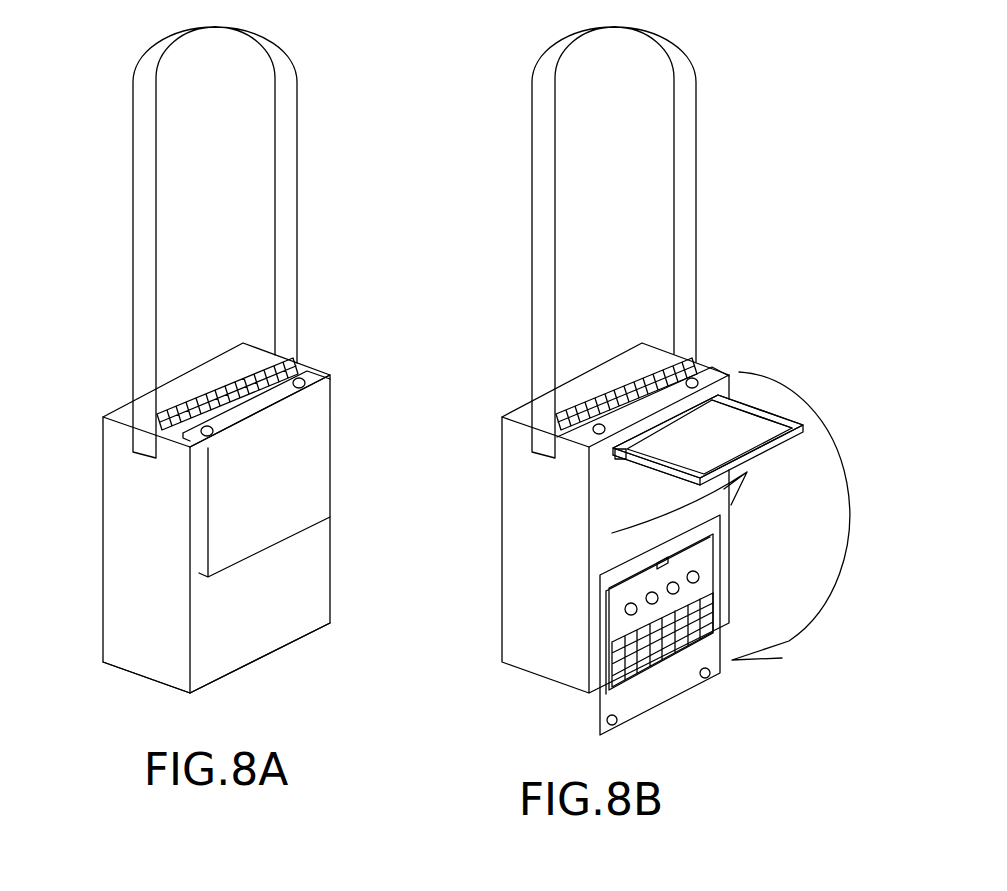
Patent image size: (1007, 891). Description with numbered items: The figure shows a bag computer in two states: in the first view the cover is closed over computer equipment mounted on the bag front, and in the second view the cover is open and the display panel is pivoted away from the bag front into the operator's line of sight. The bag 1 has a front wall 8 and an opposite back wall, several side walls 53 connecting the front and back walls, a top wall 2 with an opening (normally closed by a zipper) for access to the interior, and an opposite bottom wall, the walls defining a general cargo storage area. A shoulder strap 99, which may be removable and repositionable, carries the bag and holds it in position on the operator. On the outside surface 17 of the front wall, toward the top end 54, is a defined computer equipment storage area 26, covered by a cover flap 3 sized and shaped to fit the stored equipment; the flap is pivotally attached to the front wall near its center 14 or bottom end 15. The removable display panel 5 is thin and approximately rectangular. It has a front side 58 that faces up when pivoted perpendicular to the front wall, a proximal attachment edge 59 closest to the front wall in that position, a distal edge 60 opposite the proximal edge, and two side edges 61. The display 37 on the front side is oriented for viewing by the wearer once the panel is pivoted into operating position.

In FIG. 8A, the bag 1 is at (117, 403).
In FIG. 8A, the top wall 2 is at (217, 368).
In FIG. 8A, the cover flap 3 is at (277, 492).
In FIG. 8B, the cover flap 3 is at (605, 703).
In FIG. 8A, the front wall 8 is at (200, 608).
In FIG. 8A, the bottom end 15 is at (278, 650).
In FIG. 8A, the outside surface 17 is at (247, 618).
In FIG. 8A, the shoulder strap 99 is at (289, 249).
In FIG. 8B, the display panel 5 is at (755, 400).
In FIG. 8B, the center 14 is at (597, 577).
In FIG. 8B, the computer equipment storage area 26 is at (657, 503).
In FIG. 8B, the display 37 is at (760, 432).
In FIG. 8B, the side walls 53 is at (538, 588).
In FIG. 8B, the top end 54 is at (683, 397).
In FIG. 8B, the front side 58 is at (770, 417).
In FIG. 8B, the proximal attachment edge 59 is at (655, 427).
In FIG. 8B, the distal edge 60 is at (770, 448).
In FIG. 8B, the side edges 61 is at (650, 463).